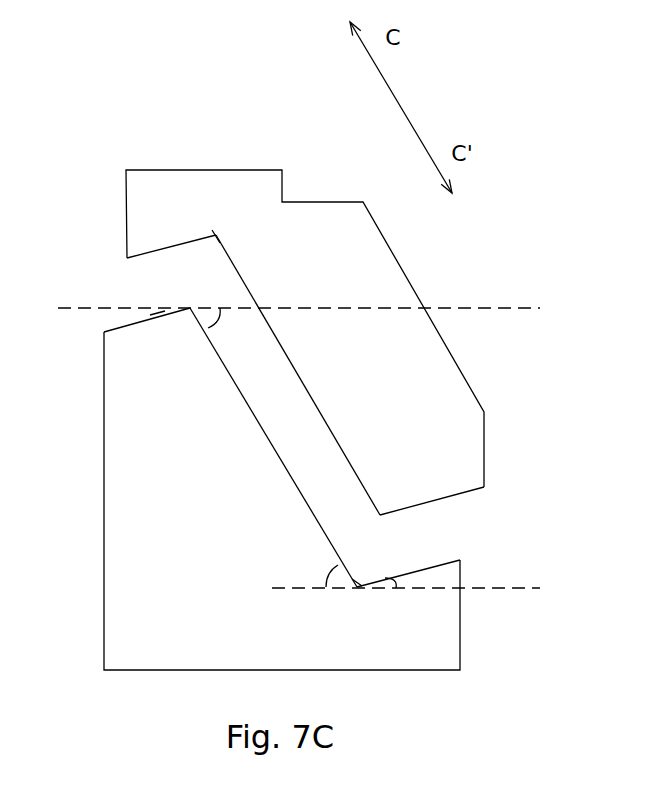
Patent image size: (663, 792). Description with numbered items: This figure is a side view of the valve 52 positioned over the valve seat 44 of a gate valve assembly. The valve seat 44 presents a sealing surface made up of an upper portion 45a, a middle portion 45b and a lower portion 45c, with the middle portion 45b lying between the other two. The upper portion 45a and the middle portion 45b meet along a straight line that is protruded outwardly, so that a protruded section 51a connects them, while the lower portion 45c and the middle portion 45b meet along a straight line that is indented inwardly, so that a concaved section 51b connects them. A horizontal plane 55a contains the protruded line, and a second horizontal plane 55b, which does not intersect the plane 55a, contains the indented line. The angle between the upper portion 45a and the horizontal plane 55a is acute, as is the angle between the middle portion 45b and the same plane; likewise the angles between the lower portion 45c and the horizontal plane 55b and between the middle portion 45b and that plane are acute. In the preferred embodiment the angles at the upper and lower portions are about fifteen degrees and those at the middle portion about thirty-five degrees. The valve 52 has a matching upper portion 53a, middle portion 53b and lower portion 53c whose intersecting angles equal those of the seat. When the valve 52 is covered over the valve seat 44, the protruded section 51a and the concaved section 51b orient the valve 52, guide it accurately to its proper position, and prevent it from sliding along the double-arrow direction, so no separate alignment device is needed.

The valve seat 44 is at (170, 627).
The upper portion 45a is at (143, 317).
The middle portion 45b is at (263, 432).
The lower portion 45c is at (416, 570).
The protruded section 51a is at (181, 280).
The concaved section 51b is at (366, 558).
The valve 52 is at (303, 251).
The upper portion 53a is at (160, 250).
The middle portion 53b is at (297, 372).
The lower portion 53c is at (453, 497).
The horizontal plane 55a is at (317, 308).
The horizontal plane 55b is at (425, 588).